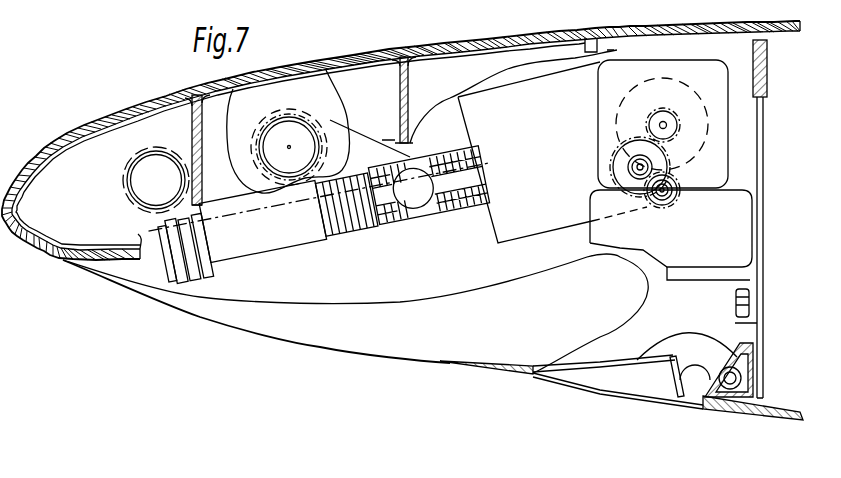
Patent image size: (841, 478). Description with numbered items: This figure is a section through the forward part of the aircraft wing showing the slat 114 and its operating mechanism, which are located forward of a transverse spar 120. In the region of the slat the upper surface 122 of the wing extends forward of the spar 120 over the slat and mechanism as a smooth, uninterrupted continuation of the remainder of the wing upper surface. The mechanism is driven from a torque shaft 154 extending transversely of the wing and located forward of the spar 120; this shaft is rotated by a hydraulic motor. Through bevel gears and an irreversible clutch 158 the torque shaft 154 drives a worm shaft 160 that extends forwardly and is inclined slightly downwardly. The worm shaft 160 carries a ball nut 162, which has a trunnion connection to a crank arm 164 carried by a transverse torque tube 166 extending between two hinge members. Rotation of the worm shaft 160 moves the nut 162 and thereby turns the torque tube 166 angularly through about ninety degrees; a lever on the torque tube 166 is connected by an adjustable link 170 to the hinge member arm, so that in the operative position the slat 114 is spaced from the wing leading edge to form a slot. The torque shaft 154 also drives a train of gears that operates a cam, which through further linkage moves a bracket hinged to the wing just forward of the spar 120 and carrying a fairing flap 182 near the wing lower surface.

The slat 114 is at (317, 343).
The transverse spar 120 is at (764, 187).
The upper surface 122 is at (443, 44).
The torque shaft 154 is at (667, 125).
The irreversible clutch 158 is at (528, 146).
The worm shaft 160 is at (340, 228).
The ball nut 162 is at (463, 207).
The crank arm 164 is at (362, 136).
The torque tube 166 is at (277, 117).
The adjustable link 170 is at (690, 172).
The fairing flap 182 is at (600, 405).